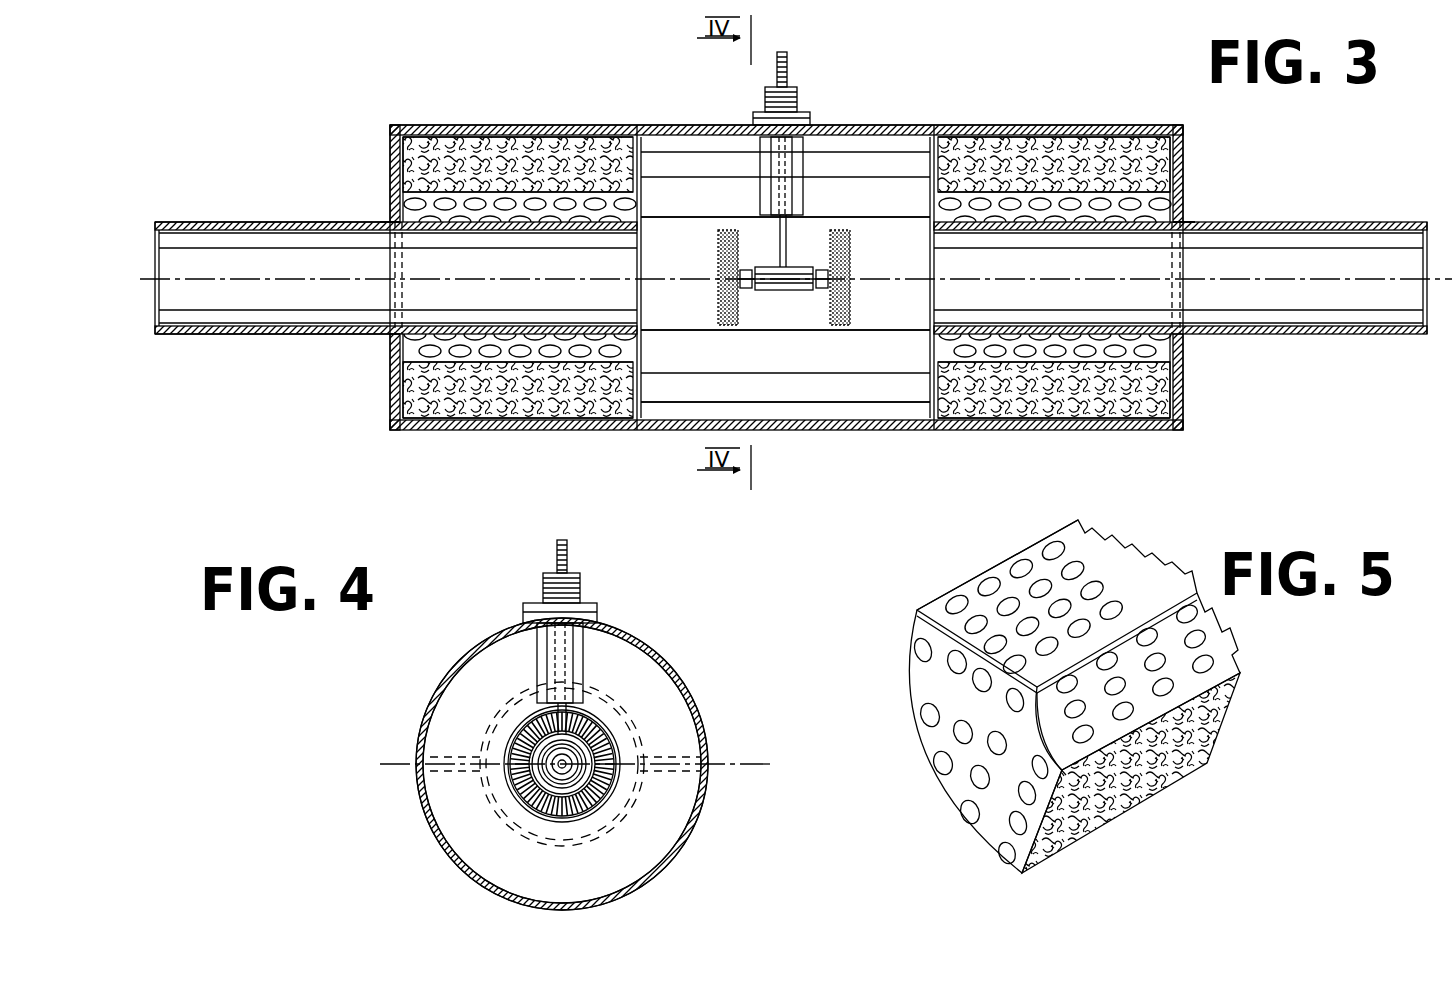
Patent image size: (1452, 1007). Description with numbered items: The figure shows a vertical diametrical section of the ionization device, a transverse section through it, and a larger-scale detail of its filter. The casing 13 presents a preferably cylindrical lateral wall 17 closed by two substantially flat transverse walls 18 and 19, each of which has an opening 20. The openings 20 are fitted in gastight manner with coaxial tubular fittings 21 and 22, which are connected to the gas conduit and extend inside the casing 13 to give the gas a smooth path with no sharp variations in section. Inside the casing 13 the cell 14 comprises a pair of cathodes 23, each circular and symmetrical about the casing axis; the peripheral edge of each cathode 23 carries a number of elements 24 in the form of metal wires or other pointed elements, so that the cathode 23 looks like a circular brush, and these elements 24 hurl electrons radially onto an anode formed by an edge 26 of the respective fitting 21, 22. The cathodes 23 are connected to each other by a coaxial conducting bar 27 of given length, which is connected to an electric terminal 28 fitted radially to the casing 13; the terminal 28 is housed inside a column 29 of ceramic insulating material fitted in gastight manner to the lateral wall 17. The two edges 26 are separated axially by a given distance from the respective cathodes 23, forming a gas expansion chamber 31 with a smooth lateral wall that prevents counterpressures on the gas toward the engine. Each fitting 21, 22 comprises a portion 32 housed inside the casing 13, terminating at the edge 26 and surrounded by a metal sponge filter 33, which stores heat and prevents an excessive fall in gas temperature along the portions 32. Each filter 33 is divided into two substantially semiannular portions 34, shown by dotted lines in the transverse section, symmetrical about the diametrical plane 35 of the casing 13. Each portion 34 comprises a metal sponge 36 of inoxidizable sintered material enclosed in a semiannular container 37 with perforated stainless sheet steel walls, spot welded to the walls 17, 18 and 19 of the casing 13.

In FIG. 3, the casing 13 is at (1048, 105).
In FIG. 4, the casing 13 is at (688, 648).
In FIG. 3, the cell 14 is at (862, 380).
In FIG. 3, the lateral wall 17 is at (650, 126).
In FIG. 4, the lateral wall 17 is at (690, 695).
In FIG. 3, the transverse wall 18 is at (388, 390).
In FIG. 3, the transverse wall 19 is at (1183, 390).
In FIG. 4, the transverse wall 19 is at (493, 790).
In FIG. 3, the opening 20 is at (378, 228).
In FIG. 3, the tubular fitting 21 is at (248, 337).
In FIG. 3, the tubular fitting 22 is at (1320, 334).
In FIG. 4, the tubular fitting 22 is at (615, 797).
In FIG. 3, the cathode 23 is at (718, 255).
In FIG. 4, the cathode 23 is at (570, 788).
In FIG. 3, the pointed elements 24 is at (850, 240).
In FIG. 4, the pointed elements 24 is at (598, 742).
In FIG. 3, the edge 26 is at (932, 225).
In FIG. 4, the edge 26 is at (503, 748).
In FIG. 3, the conducting bar 27 is at (770, 286).
In FIG. 4, the conducting bar 27 is at (553, 770).
In FIG. 3, the electric terminal 28 is at (787, 63).
In FIG. 4, the electric terminal 28 is at (573, 562).
In FIG. 3, the column 29 is at (803, 170).
In FIG. 4, the column 29 is at (547, 648).
In FIG. 3, the gas expansion chamber 31 is at (813, 393).
In FIG. 3, the portion 32 is at (552, 297).
In FIG. 3, the metal sponge filter 33 is at (468, 412).
In FIG. 4, the semiannular portion 34 is at (683, 752).
In FIG. 5, the semiannular portion 34 is at (933, 822).
In FIG. 3, the diametrical plane 35 is at (1390, 218).
In FIG. 4, the diametrical plane 35 is at (773, 760).
In FIG. 5, the metal sponge 36 is at (1127, 788).
In FIG. 5, the semiannular container 37 is at (913, 667).